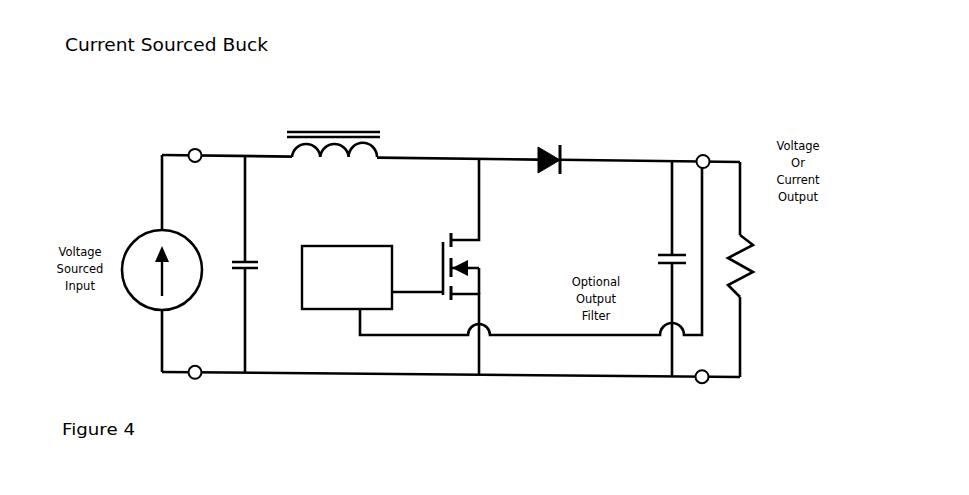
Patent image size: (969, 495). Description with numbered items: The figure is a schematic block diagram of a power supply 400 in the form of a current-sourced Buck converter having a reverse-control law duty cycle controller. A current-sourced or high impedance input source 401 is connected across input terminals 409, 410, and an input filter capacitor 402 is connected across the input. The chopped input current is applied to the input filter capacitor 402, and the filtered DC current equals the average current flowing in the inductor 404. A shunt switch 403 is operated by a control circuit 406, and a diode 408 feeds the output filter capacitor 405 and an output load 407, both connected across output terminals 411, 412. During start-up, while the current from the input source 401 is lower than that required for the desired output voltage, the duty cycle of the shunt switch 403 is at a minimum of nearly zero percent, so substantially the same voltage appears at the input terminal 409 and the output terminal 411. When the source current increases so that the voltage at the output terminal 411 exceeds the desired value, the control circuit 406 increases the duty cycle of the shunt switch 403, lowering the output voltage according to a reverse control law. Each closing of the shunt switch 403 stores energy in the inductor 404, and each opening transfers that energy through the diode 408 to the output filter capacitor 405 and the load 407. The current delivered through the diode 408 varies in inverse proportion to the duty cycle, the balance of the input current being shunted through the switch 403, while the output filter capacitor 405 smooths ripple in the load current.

The power supply 400 is at (110, 182).
The current-sourced input source 401 is at (155, 263).
The input filter capacitor 402 is at (262, 259).
The shunt switch 403 is at (427, 256).
The inductor 404 is at (338, 128).
The output filter capacitor 405 is at (657, 258).
The control circuit 406 is at (363, 245).
The output load 407 is at (757, 276).
The diode 408 is at (548, 145).
The input terminal 409 is at (195, 148).
The input terminal 410 is at (195, 380).
The output terminal 411 is at (703, 153).
The output terminal 412 is at (702, 384).